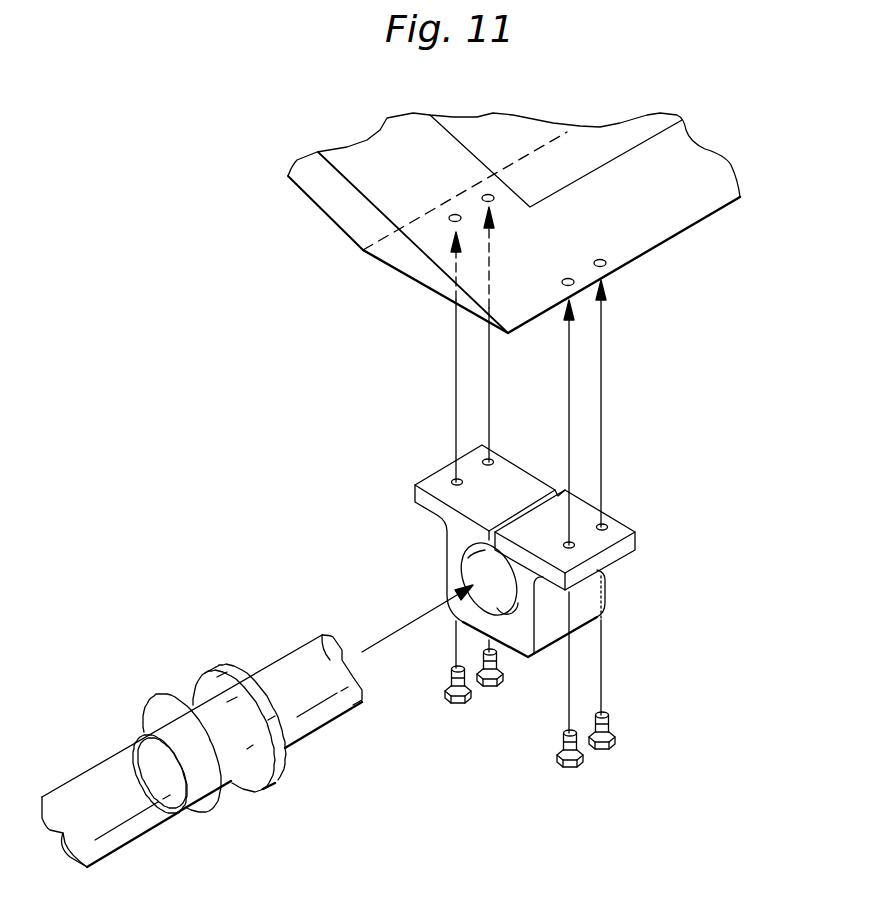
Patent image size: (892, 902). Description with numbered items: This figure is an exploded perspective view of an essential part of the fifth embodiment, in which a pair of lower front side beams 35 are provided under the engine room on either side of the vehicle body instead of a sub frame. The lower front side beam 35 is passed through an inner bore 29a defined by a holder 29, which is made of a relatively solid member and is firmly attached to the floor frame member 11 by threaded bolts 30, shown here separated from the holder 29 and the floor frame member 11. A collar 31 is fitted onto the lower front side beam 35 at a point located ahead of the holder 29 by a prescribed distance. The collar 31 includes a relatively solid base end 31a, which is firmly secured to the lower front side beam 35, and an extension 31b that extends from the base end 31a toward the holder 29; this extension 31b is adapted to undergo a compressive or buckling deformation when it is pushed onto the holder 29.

The floor frame member 11 is at (667, 228).
The holder 29 is at (510, 591).
The inner bore 29a is at (505, 616).
The threaded bolts 30 is at (492, 688).
The collar 31 is at (174, 711).
The base end 31a is at (177, 698).
The extension 31b is at (213, 684).
The lower front side beam 35 is at (118, 862).